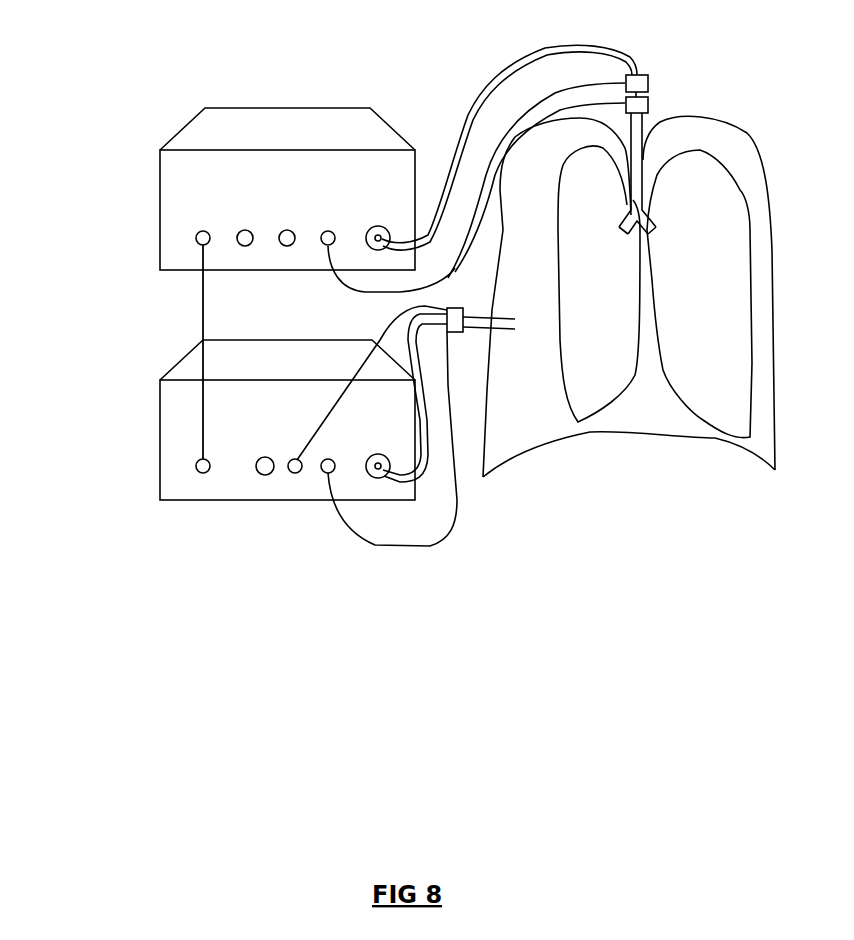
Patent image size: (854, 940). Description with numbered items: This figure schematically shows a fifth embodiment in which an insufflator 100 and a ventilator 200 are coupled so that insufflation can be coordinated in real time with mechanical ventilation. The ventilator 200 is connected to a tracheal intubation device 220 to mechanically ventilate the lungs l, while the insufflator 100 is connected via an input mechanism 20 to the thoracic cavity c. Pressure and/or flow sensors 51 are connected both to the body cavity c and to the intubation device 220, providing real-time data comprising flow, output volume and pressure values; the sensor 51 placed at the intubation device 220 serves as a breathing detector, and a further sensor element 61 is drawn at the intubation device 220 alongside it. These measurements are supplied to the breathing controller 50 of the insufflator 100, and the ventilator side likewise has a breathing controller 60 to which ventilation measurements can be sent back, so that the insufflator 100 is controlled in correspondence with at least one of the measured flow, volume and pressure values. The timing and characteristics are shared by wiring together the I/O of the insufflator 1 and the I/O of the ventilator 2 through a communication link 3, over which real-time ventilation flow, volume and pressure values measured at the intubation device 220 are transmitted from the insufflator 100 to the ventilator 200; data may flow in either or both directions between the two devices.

The I/O of the insufflator 1 is at (201, 478).
The I/O of the ventilator 2 is at (203, 228).
The communication link 3 is at (181, 352).
The input mechanism 20 is at (482, 311).
The breathing controller 50 is at (327, 478).
The pressure and/or flow sensors 51 is at (651, 107).
The breathing controller 60 is at (328, 229).
The flow sensor 61 is at (651, 82).
The insufflator 100 is at (158, 442).
The ventilator 200 is at (158, 212).
The tracheal intubation device 220 is at (648, 120).
The lung l is at (655, 292).
The thoracic cavity c is at (629, 296).